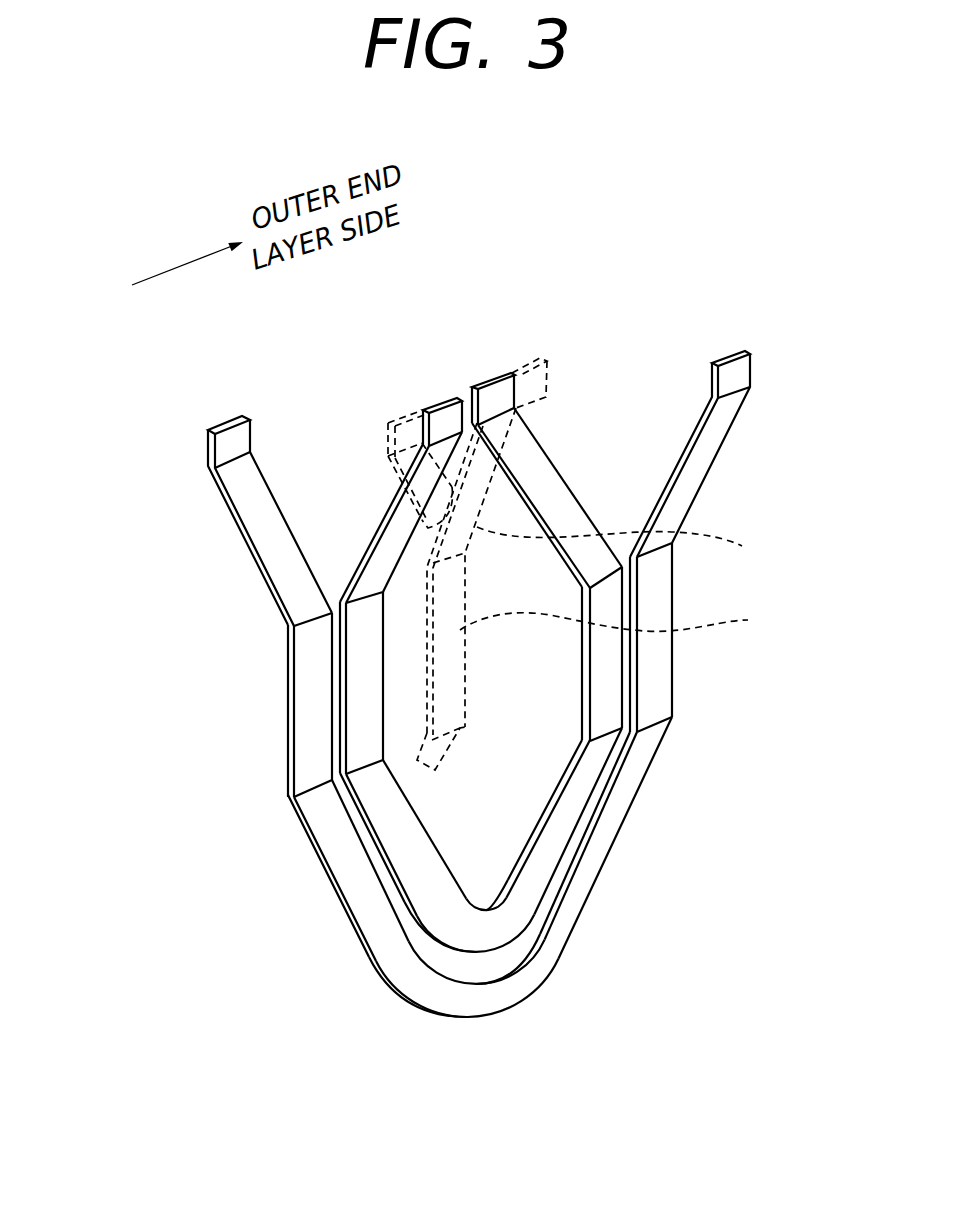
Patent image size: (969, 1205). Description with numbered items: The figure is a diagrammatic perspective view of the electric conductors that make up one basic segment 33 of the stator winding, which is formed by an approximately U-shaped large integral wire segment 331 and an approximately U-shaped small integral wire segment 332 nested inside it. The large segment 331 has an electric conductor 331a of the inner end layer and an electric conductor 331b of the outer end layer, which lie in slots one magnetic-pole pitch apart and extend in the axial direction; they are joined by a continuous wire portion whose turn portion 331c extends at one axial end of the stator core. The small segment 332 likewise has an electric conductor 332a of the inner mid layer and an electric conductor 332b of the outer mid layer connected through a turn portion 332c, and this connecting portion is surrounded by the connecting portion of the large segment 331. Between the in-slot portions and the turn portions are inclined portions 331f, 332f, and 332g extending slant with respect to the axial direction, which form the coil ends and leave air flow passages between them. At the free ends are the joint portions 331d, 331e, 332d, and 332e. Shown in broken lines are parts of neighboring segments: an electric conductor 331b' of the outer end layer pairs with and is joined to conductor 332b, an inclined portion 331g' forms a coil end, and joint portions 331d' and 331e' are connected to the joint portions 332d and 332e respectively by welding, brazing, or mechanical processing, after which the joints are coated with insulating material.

The basic segment 33 is at (377, 997).
The large segment 331 is at (482, 687).
The small segment 332 is at (487, 616).
The electric conductor of the inner end layer 331a is at (306, 654).
The electric conductor of the outer end layer 331b is at (734, 637).
The turn portion 331c is at (478, 1008).
The electric conductor joint portion of the inner end layer 331d is at (199, 521).
The electric conductor joint portion of the outer end layer 331e is at (764, 446).
The inclined portion 331f is at (350, 865).
The electric conductor of the outer end layer 331b' is at (640, 621).
The electric conductor joint portion of the inner end layer 331d' is at (365, 435).
The electric conductor joint portion of the outer end layer 331e' is at (522, 510).
The inclined portion 331g' is at (644, 545).
The electric conductor of the inner mid layer 332a is at (364, 718).
The electric conductor of the outer mid layer 332b is at (610, 712).
The turn portion 332c is at (488, 935).
The electric conductor joint portion of the inner mid layer 332d is at (445, 412).
The electric conductor joint portion of the outer mid layer 332e is at (481, 384).
The inclined portion 332f is at (420, 870).
The inclined portion 332g is at (390, 540).